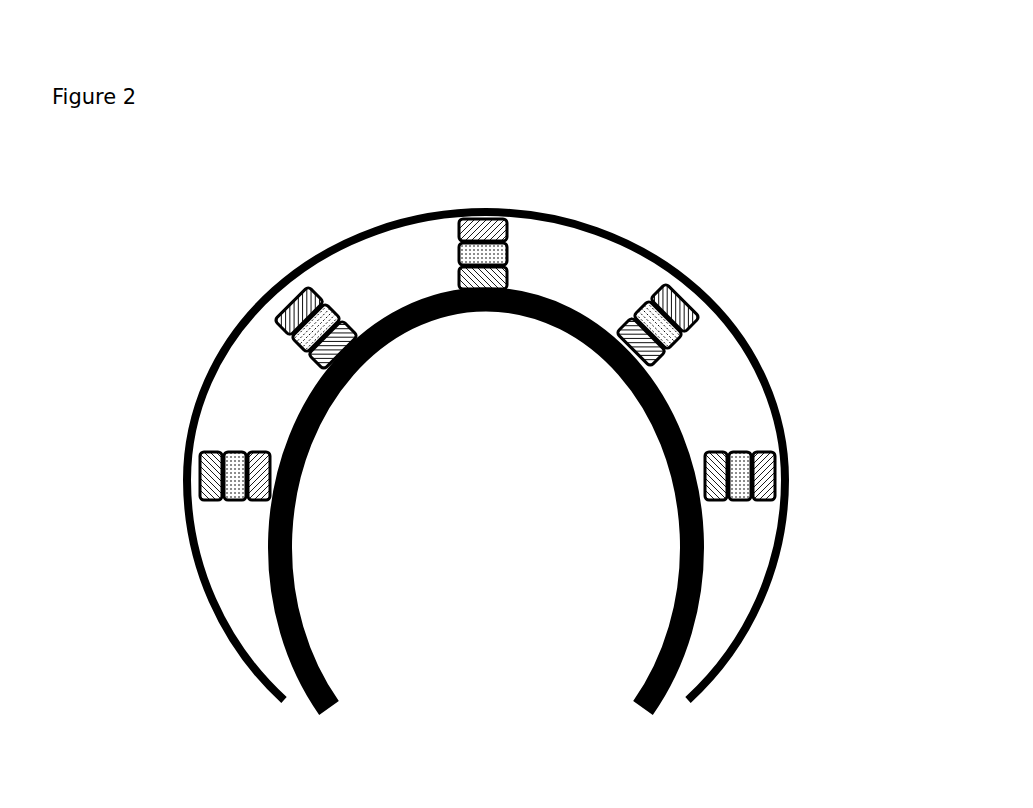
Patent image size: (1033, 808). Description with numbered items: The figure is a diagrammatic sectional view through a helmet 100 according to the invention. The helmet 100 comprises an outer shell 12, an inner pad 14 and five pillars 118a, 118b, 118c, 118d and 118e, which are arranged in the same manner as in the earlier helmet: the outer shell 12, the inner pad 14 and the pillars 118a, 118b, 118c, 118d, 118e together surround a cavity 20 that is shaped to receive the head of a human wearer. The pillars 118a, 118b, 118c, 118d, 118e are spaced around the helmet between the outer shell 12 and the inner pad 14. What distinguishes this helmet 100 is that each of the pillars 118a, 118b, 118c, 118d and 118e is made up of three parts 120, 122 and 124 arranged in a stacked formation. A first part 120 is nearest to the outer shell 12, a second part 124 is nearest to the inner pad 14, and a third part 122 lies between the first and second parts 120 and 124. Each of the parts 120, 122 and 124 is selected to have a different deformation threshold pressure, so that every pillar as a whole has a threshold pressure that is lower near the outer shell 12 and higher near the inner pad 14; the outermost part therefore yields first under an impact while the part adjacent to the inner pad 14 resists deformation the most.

The helmet 100 is at (779, 301).
The outer shell 12 is at (775, 402).
The inner pad 14 is at (578, 340).
The cavity 20 is at (486, 495).
The pillar 118a is at (200, 478).
The pillar 118b is at (283, 298).
The pillar 118c is at (452, 282).
The pillar 118d is at (697, 293).
The pillar 118e is at (777, 477).
The first part 120 is at (506, 222).
The third part 122 is at (507, 250).
The second part 124 is at (507, 277).